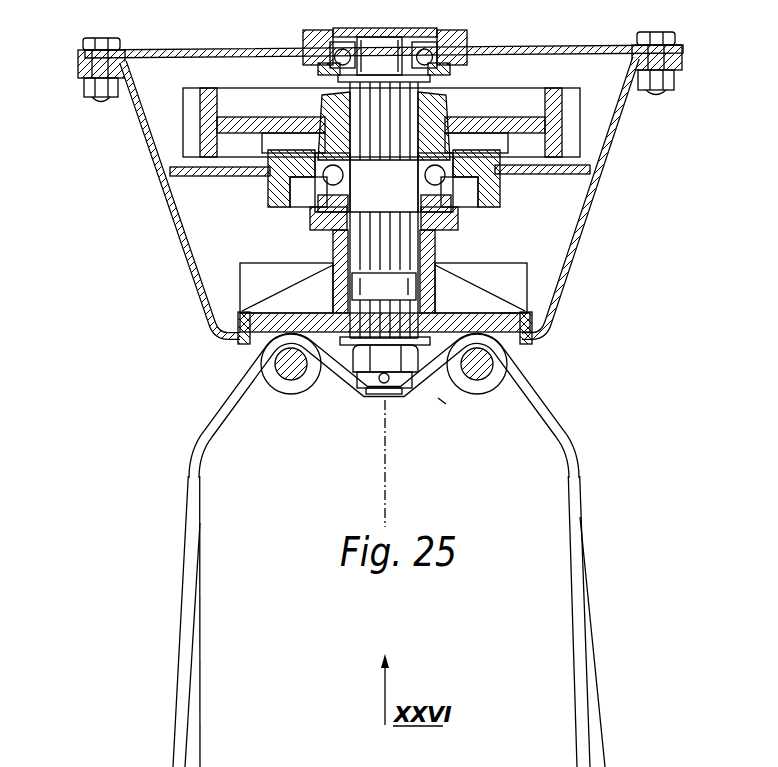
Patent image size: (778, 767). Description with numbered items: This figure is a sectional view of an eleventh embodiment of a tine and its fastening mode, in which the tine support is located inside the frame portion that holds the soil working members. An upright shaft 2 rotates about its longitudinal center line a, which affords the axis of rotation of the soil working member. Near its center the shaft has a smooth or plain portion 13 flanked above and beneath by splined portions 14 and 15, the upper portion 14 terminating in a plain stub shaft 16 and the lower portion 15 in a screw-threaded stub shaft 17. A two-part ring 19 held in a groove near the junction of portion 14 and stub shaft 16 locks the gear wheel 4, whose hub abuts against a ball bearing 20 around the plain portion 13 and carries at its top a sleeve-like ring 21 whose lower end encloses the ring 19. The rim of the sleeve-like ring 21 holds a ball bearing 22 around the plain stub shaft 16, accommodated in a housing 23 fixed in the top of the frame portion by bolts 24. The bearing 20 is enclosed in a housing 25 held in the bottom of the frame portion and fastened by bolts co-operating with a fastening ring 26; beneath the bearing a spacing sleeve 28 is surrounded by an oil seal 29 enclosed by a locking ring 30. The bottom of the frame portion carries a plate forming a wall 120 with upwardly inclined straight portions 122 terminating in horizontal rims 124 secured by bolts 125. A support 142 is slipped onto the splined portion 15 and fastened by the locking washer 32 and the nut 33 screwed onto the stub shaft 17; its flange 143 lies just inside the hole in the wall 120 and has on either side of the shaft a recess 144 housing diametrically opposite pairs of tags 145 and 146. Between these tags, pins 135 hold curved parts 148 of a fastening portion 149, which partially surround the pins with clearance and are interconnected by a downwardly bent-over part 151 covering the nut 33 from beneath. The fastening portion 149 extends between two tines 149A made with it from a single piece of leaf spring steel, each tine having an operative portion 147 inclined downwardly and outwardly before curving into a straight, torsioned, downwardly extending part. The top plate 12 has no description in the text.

The upright shaft 2 is at (377, 34).
The gear wheel 4 is at (570, 90).
The top plate 12 is at (556, 38).
The smooth or plain portion 13 is at (380, 190).
The upper splined portion 14 is at (420, 108).
The lower splined portion 15 is at (345, 250).
The plain stub shaft 16 is at (385, 48).
The screw-threaded stub shaft 17 is at (390, 392).
The ring 19 is at (431, 79).
The ball bearing 20 is at (452, 147).
The sleeve-like ring 21 is at (332, 95).
The ball bearing 22 is at (322, 64).
The housing 23 is at (305, 42).
The bolts 24 is at (460, 33).
The housing 25 is at (268, 194).
The fastening ring 26 is at (300, 157).
The spacing sleeve 28 is at (456, 215).
The oil seal 29 is at (300, 212).
The locking ring 30 is at (445, 231).
The locking washer 32 is at (446, 406).
The nut 33 is at (351, 381).
The wall 120 is at (389, 197).
The upwardly inclined straight portions 122 is at (182, 248).
The horizontal rim 124 is at (82, 76).
The bolts 125 is at (118, 100).
The pins 135 is at (270, 373).
The support 142 is at (440, 277).
The flange 143 is at (507, 311).
The recess 144 is at (247, 316).
The tags 145 is at (285, 394).
The tags 146 is at (478, 394).
The operative portion 147 is at (188, 552).
The curved parts 148 is at (262, 351).
The fastening portion 149 is at (344, 398).
The tines 149A is at (202, 617).
The downwardly bent-over part 151 is at (406, 394).
The longitudinal center line a is at (383, 472).